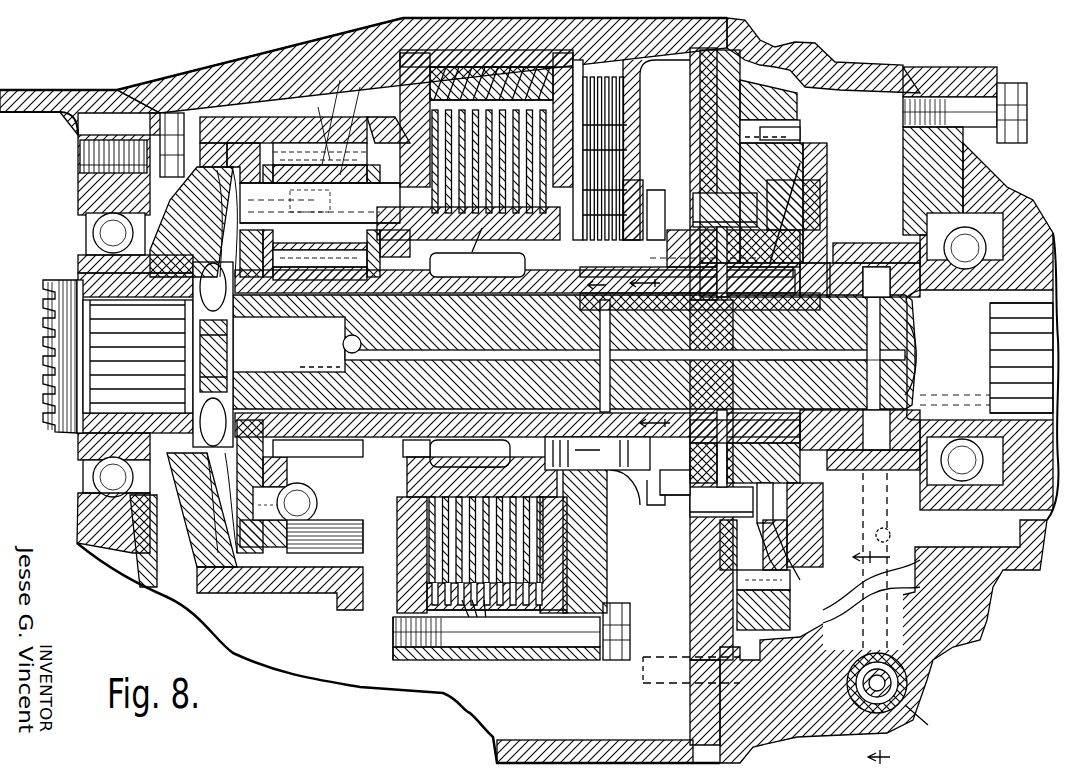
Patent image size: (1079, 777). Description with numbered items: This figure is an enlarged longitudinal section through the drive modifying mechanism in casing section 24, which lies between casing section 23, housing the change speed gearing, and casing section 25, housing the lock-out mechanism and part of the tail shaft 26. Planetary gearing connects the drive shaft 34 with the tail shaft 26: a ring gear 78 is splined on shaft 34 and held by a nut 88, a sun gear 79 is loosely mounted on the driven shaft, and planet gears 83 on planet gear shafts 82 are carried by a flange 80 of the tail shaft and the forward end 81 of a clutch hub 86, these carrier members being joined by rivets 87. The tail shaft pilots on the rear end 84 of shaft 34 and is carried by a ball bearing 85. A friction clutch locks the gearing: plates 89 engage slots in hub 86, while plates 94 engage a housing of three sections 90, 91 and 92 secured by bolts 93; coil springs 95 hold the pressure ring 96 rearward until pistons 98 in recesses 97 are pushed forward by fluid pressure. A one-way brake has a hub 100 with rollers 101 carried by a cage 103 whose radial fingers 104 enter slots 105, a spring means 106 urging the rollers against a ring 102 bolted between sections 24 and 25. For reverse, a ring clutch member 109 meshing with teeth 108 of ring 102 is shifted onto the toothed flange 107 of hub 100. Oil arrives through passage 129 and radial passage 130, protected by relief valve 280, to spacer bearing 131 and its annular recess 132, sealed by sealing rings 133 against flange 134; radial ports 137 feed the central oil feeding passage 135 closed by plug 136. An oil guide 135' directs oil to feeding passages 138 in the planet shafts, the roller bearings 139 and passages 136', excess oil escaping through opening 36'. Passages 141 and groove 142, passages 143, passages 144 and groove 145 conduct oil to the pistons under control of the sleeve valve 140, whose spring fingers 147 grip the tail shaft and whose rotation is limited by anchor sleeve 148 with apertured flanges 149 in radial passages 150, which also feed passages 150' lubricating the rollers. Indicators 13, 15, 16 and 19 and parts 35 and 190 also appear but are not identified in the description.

The section line 13 is at (876, 553).
The direction arrow 15 is at (668, 354).
The direction arrow 16 is at (605, 265).
The section line 19 is at (882, 762).
The casing section 23 is at (38, 92).
The casing section 24 is at (212, 75).
The casing section 25 is at (838, 68).
The tail shaft 26 is at (975, 336).
The drive shaft 34 is at (62, 275).
The ball bearing 35 is at (100, 226).
The opening 36' is at (177, 140).
The ring gear 78 is at (287, 120).
The sun gear 79 is at (345, 442).
The flange 80 is at (252, 150).
The forward end of clutch hub 81 is at (290, 462).
The planet gear shafts 82 is at (392, 180).
The planet gears 83 is at (385, 130).
The rear end of shaft 84 is at (290, 343).
The ball bearing 85 is at (1000, 205).
The clutch hub 86 is at (472, 249).
The rivets 87 is at (312, 495).
The nut 88 is at (228, 318).
The plates 89 is at (460, 228).
The clutch housing section 90 is at (403, 650).
The clutch housing section 91 is at (470, 648).
The clutch housing section 92 is at (590, 655).
The bolts 93 is at (512, 650).
The plates 94 is at (474, 615).
The coil springs 95 is at (473, 60).
The pressure ring 96 is at (560, 540).
The recesses 97 is at (612, 110).
The pistons 98 is at (620, 140).
The hub 100 is at (830, 228).
The rollers 101 is at (715, 213).
The ring 102 is at (690, 585).
The cage 103 is at (672, 505).
The radial fingers 104 is at (636, 505).
The slots 105 is at (600, 480).
The spring means 106 is at (655, 510).
The flange 107 is at (820, 172).
The teeth 108 is at (790, 130).
The ring clutch member 109 is at (775, 95).
The passage 129 is at (655, 690).
The radially extending passage 130 is at (907, 678).
The spacer bearing 131 is at (858, 255).
The annular recess 132 is at (915, 325).
The sealing rings 133 is at (868, 485).
The flange 134 is at (876, 265).
The oil feeding passage 135 is at (298, 473).
The oil guide 135' is at (158, 541).
The plug 136 is at (330, 342).
The passages 136' is at (333, 115).
The radial ports 137 is at (915, 365).
The feeding passages 138 is at (317, 126).
The roller bearings 139 is at (355, 125).
The sleeve valve 140 is at (515, 275).
The passages 141 is at (612, 352).
The annular groove 142 is at (570, 438).
The passages 143 is at (605, 318).
The passages 144 is at (645, 230).
The annular groove 145 is at (668, 255).
The spring fingers 147 is at (480, 440).
The anchor sleeve 148 is at (830, 359).
The apertured flanges 149 is at (765, 335).
The radial passages 150 is at (735, 353).
The radial passages 150' is at (790, 536).
The passage 190 is at (490, 455).
The relief valve 280 is at (929, 720).